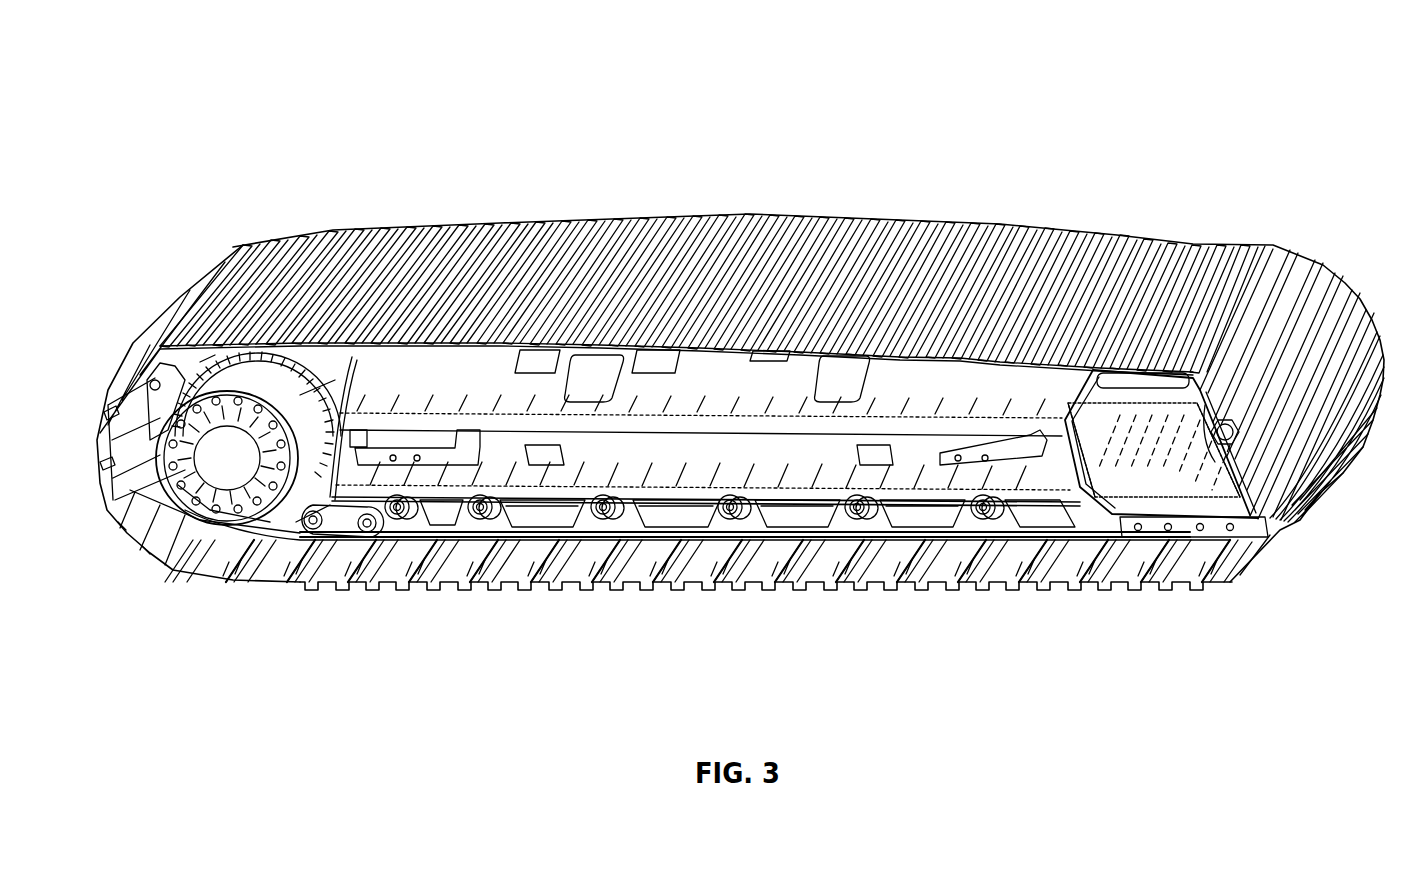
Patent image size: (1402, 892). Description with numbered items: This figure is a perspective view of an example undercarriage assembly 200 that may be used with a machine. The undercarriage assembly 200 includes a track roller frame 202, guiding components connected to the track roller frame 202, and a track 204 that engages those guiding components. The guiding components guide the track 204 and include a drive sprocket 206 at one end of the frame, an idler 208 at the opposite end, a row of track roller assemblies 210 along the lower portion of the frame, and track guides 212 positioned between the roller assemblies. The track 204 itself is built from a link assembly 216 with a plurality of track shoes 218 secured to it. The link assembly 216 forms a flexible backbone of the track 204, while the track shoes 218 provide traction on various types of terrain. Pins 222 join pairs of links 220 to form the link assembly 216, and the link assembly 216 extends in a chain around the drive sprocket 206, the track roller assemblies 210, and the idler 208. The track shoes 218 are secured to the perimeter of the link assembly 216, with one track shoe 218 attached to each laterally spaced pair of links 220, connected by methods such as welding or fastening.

The undercarriage assembly 200 is at (199, 125).
The track roller frame 202 is at (720, 468).
The track 204 is at (1217, 238).
The drive sprocket 206 is at (127, 527).
The idler 208 is at (1262, 470).
The track roller assemblies 210 is at (400, 518).
The track guides 212 is at (562, 520).
The link assembly 216 is at (268, 522).
The track shoes 218 is at (118, 422).
The links 220 is at (392, 525).
The pins 222 is at (368, 520).